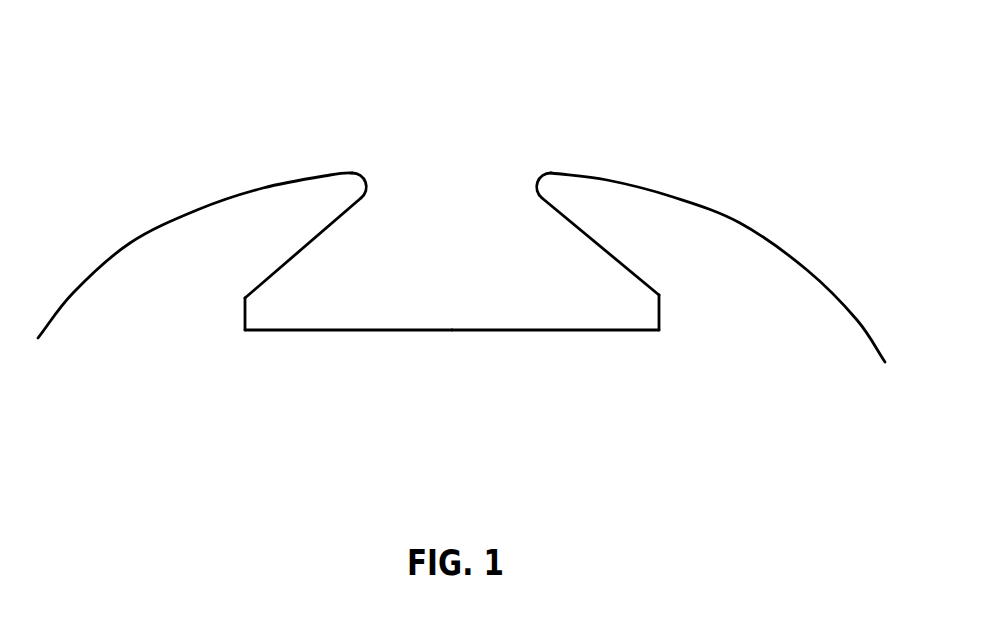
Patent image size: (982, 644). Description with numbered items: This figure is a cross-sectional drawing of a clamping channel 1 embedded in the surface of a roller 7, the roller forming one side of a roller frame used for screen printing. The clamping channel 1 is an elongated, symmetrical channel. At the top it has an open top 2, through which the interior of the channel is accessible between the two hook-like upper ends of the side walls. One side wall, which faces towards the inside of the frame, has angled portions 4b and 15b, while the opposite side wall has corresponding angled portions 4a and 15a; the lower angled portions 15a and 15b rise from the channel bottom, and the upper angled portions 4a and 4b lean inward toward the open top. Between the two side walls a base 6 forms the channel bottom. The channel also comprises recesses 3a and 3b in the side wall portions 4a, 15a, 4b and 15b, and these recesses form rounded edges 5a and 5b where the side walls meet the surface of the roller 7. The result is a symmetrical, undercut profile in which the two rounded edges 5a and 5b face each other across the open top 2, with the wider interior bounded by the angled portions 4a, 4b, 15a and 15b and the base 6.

The clamping channel 1 is at (445, 248).
The open top 2 is at (441, 155).
The recess 3a is at (295, 300).
The recess 3b is at (586, 300).
The angled portion 4a is at (325, 237).
The angled portion 4b is at (563, 228).
The rounded edge 5a is at (345, 192).
The rounded edge 5b is at (561, 190).
The base 6 is at (418, 372).
The roller 7 is at (813, 277).
The angled portion 15a is at (230, 312).
The angled portion 15b is at (671, 312).